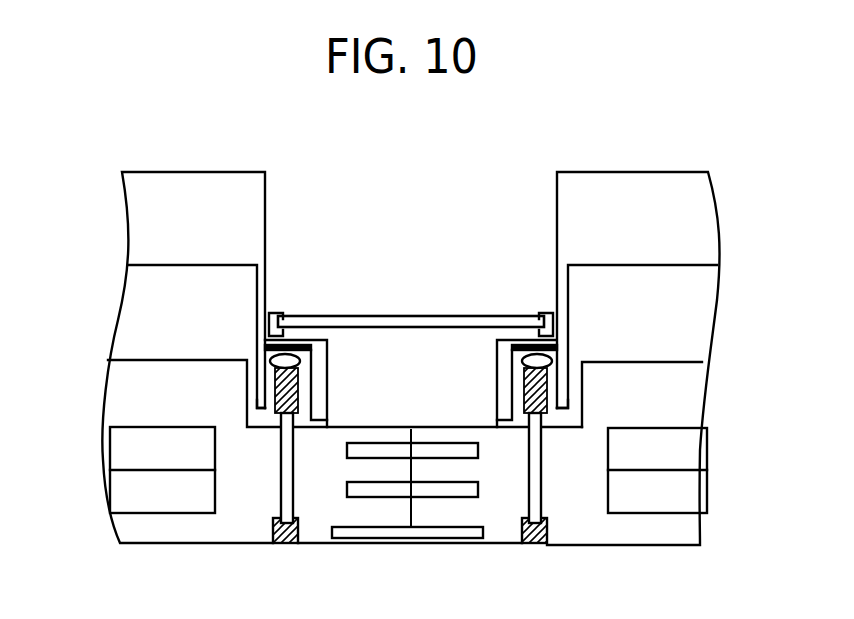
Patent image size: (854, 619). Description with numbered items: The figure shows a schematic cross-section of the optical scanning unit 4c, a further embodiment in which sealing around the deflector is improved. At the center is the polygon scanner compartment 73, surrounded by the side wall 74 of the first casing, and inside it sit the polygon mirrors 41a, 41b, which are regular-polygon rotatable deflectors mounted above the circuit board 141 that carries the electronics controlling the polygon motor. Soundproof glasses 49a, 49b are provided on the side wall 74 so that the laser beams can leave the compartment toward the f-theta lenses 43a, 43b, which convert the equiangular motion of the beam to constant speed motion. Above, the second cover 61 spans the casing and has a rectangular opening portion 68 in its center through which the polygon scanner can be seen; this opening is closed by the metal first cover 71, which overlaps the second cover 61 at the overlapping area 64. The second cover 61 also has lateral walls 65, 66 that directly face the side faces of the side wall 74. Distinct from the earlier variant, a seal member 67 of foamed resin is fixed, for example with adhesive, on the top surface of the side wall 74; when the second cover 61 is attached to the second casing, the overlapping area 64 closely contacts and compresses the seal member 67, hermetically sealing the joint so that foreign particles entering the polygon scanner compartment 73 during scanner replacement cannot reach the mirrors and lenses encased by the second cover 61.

The optical scanning unit 4c is at (658, 103).
The second cover 61 is at (675, 171).
The overlapping area 64 is at (285, 325).
The lateral wall 65 is at (319, 392).
The lateral wall 66 is at (260, 408).
The seal member 67 is at (300, 362).
The opening portion 68 is at (406, 352).
The first cover 71 is at (441, 315).
The polygon scanner compartment 73 is at (505, 512).
The side wall 74 is at (262, 392).
The f-theta lens 43a is at (110, 445).
The f-theta lens 43b is at (697, 453).
The polygon mirror 41a is at (463, 479).
The polygon mirror 41b is at (367, 462).
The soundproof glass 49a is at (280, 492).
The soundproof glass 49b is at (543, 490).
The circuit board 141 is at (397, 538).